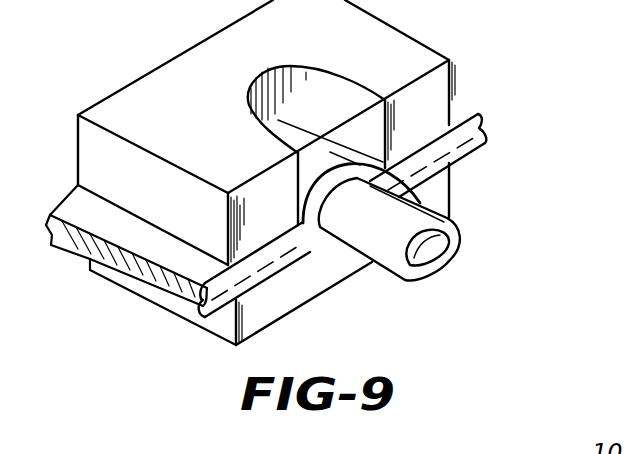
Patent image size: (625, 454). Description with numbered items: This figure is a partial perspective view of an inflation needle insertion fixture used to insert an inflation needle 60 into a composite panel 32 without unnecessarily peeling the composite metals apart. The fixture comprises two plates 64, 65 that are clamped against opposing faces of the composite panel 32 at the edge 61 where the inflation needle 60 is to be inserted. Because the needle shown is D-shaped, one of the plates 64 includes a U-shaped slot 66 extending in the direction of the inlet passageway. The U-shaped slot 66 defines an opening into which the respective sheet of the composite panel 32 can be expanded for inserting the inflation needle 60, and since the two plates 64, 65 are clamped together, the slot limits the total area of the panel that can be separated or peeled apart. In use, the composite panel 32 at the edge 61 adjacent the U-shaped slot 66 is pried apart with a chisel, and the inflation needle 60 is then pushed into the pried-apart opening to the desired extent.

The composite panel 32 is at (133, 240).
The inflation needle 60 is at (452, 221).
The edge 61 is at (485, 128).
The plate 64 is at (447, 88).
The plate 65 is at (452, 187).
The U-shaped slot 66 is at (343, 100).